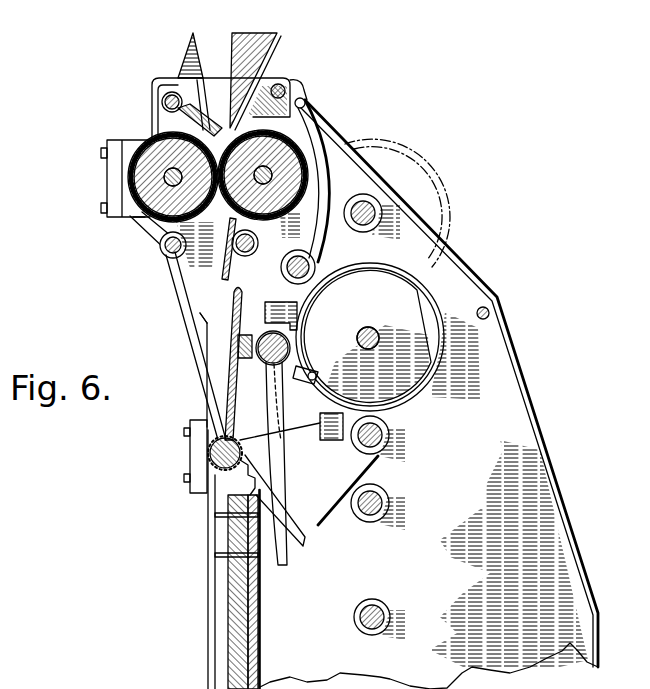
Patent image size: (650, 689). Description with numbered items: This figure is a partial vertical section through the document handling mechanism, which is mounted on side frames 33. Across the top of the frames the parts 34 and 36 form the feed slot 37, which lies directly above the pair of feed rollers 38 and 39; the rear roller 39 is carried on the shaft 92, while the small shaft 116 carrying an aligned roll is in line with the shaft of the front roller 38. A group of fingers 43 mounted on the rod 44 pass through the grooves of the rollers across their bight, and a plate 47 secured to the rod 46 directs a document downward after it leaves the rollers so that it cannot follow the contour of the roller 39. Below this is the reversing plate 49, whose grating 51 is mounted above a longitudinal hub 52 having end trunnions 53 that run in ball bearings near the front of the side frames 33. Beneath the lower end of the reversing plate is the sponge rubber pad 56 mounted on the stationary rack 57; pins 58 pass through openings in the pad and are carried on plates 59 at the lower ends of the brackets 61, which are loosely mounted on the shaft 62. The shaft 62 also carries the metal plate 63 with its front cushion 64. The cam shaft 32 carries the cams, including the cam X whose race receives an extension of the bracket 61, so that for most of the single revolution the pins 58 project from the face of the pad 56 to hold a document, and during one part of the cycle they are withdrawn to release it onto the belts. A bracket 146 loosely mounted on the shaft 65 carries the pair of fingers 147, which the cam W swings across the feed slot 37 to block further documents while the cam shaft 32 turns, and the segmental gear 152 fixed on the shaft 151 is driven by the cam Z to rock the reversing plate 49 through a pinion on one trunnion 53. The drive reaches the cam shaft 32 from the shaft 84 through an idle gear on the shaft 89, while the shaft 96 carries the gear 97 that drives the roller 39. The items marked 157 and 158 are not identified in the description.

The cam shaft 32 is at (373, 329).
The side frames 33 is at (520, 414).
The part constituting the feed slot 34 is at (258, 60).
The part constituting the feed slot 36 is at (182, 63).
The feed slot 37 is at (214, 143).
The feed roller 38 is at (125, 188).
The feed roller 39 is at (297, 143).
The fingers 43 is at (177, 120).
The rod 44 is at (162, 102).
The rod 46 is at (248, 256).
The plate 47 is at (222, 272).
The reversing plate 49 is at (225, 388).
The grating 51 is at (232, 318).
The longitudinal hub 52 is at (209, 457).
The trunnions 53 is at (208, 476).
The pad 56 is at (235, 603).
The rack 57 is at (258, 577).
The pins 58 is at (216, 556).
The plates 59 is at (280, 507).
The bracket 61 is at (284, 460).
The shaft 62 is at (266, 365).
The metal plate 63 is at (230, 362).
The cushion 64 is at (237, 348).
The shaft 65 is at (312, 262).
The shaft 84 is at (378, 612).
The shaft 89 is at (383, 500).
The shaft 92 is at (272, 177).
The shaft 96 is at (376, 216).
The gear 97 is at (405, 173).
The small shaft 116 is at (133, 217).
The bracket 146 is at (350, 146).
The fingers 147 is at (306, 99).
The shaft 151 is at (383, 440).
The segmental gear 152 is at (322, 523).
The cam follower arm 157 is at (306, 385).
The follower pin 158 is at (314, 372).